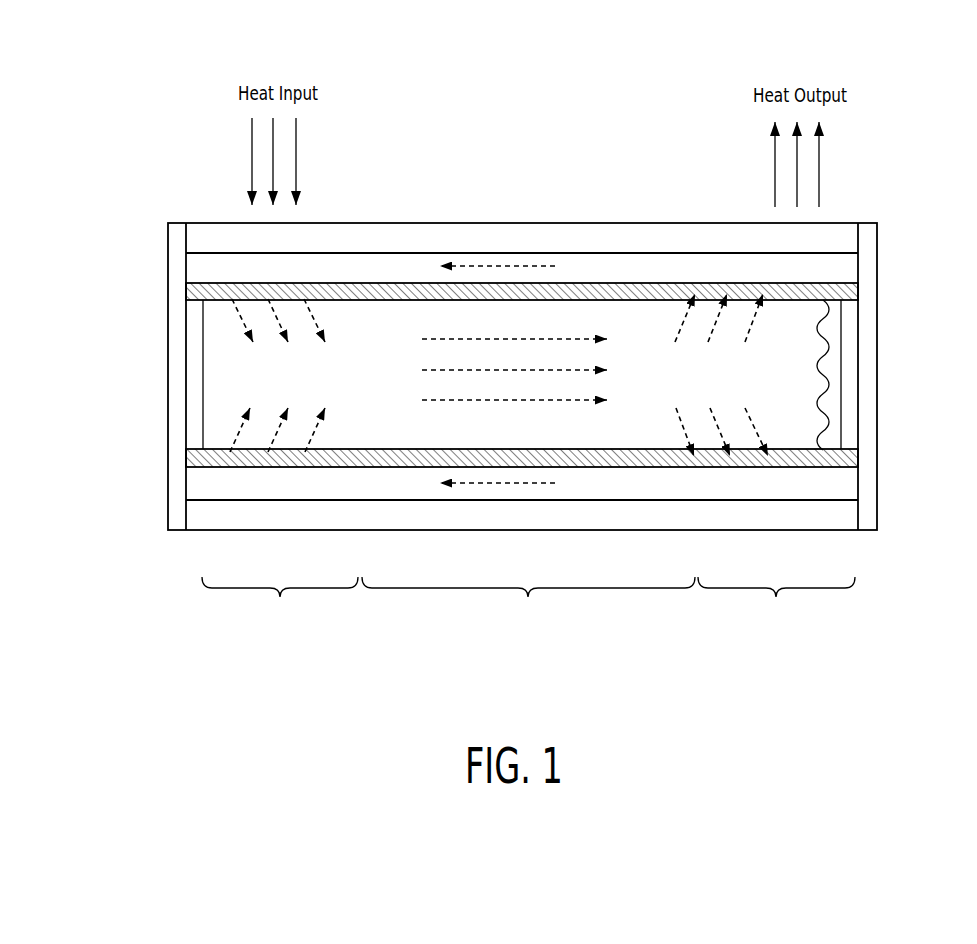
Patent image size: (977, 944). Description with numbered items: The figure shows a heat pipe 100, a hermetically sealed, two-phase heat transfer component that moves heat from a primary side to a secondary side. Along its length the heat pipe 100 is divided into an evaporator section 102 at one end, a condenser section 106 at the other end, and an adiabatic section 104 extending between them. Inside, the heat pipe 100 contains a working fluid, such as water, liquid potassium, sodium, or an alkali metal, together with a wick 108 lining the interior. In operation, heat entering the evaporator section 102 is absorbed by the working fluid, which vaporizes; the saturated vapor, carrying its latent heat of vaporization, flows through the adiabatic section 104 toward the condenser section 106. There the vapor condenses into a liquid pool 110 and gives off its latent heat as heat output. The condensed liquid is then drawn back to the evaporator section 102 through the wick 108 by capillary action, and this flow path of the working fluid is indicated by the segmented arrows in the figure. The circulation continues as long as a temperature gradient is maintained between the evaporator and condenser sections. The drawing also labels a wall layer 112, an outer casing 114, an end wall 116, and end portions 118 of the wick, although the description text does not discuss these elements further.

The heat pipe 100 is at (147, 115).
The evaporator section 102 is at (280, 602).
The adiabatic section 104 is at (528, 604).
The condenser section 106 is at (776, 602).
The wick 108 is at (582, 293).
The liquid pool 110 is at (833, 357).
The casing wall 112 is at (438, 247).
The casing 114 is at (152, 343).
The end wall 116 is at (195, 418).
The wick end portion 118 is at (185, 287).